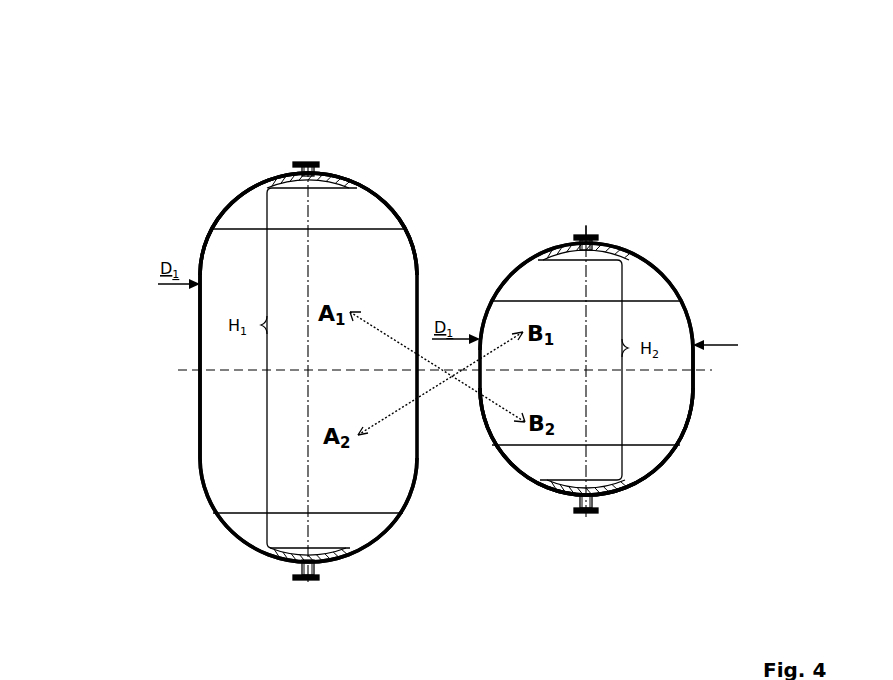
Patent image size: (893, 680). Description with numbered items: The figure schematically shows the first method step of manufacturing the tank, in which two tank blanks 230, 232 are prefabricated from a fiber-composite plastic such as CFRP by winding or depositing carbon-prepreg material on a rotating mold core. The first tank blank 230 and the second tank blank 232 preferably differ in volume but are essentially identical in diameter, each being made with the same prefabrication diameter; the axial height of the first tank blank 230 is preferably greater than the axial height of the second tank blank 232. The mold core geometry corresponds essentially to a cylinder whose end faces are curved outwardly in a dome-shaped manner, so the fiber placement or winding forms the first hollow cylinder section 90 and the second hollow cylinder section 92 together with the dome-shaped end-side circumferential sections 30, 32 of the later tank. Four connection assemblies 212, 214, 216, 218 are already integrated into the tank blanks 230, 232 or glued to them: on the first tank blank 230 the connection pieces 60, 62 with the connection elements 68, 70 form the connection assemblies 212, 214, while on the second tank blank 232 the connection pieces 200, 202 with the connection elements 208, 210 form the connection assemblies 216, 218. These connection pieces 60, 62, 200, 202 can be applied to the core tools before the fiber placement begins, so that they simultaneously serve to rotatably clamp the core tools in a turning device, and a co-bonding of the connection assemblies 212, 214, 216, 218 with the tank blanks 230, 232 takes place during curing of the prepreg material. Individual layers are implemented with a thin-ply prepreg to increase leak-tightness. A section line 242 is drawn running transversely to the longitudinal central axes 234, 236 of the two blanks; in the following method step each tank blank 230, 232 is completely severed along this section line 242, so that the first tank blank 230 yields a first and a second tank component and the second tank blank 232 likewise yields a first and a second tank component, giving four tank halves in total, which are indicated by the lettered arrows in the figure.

The first tank blank 230 is at (218, 151).
The second tank blank 232 is at (686, 170).
The longitudinal central axis 234 is at (304, 161).
The longitudinal central axis 236 is at (591, 228).
The connection piece 60 is at (313, 161).
The connection piece 62 is at (300, 581).
The connection element 68 is at (365, 208).
The connection element 70 is at (352, 537).
The dome-shaped end-side circumferential section 30 is at (232, 203).
The dome-shaped end-side circumferential section 32 is at (675, 458).
The first hollow cylinder section 90 is at (197, 315).
The second hollow cylinder section 92 is at (695, 410).
The section line 242 is at (196, 370).
The connection assembly 212 is at (308, 211).
The connection assembly 214 is at (308, 536).
The connection assembly 216 is at (586, 281).
The connection assembly 218 is at (586, 464).
The connection piece 200 is at (577, 235).
The connection piece 202 is at (577, 513).
The connection element 208 is at (653, 268).
The connection element 210 is at (635, 465).